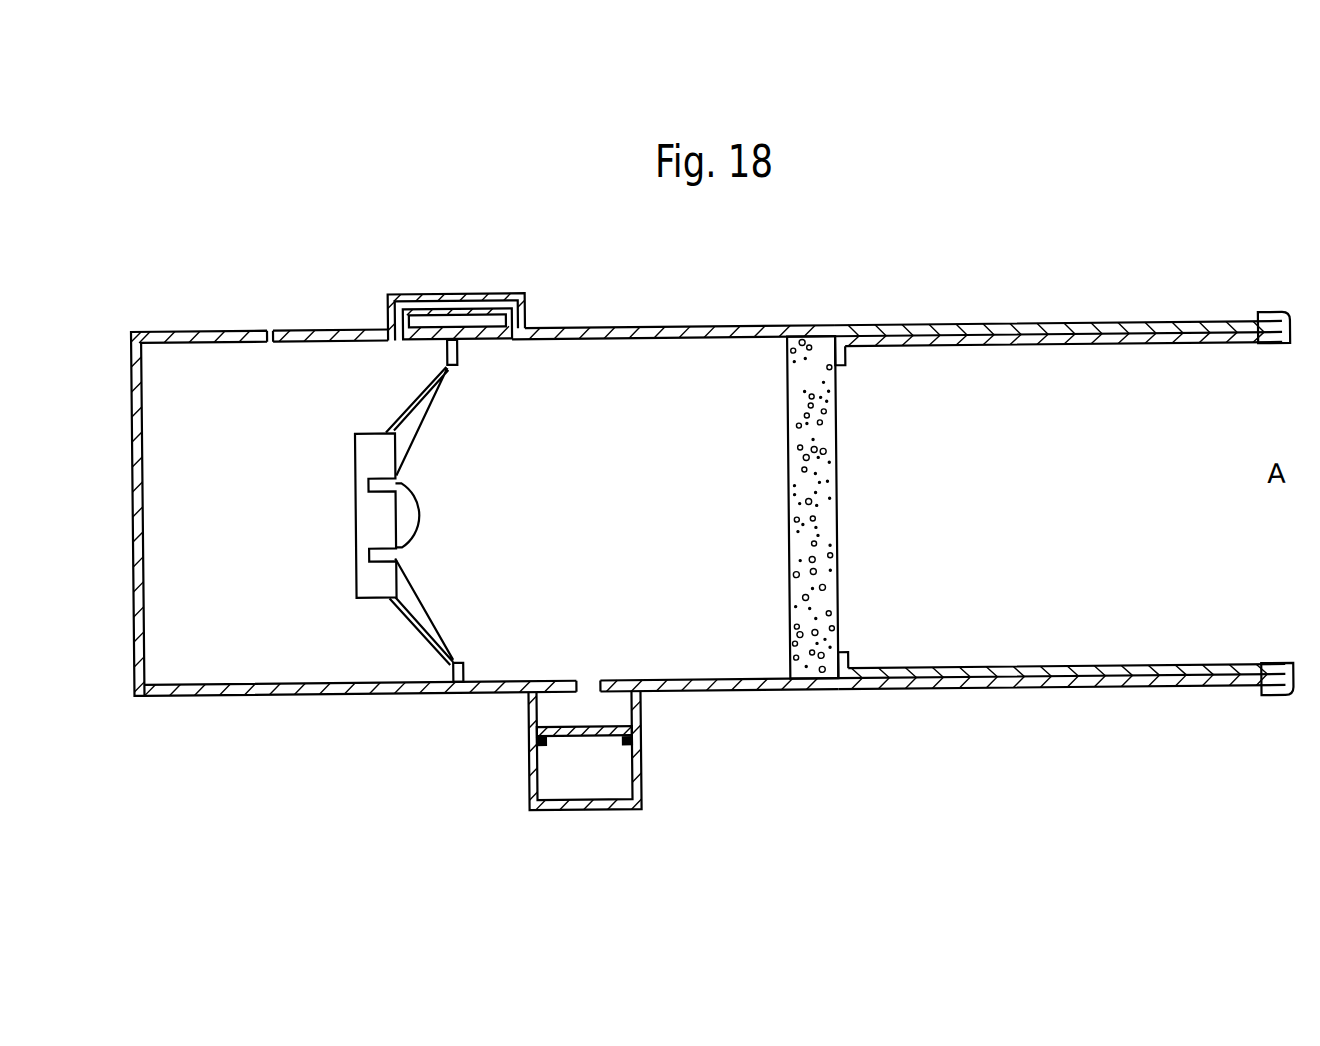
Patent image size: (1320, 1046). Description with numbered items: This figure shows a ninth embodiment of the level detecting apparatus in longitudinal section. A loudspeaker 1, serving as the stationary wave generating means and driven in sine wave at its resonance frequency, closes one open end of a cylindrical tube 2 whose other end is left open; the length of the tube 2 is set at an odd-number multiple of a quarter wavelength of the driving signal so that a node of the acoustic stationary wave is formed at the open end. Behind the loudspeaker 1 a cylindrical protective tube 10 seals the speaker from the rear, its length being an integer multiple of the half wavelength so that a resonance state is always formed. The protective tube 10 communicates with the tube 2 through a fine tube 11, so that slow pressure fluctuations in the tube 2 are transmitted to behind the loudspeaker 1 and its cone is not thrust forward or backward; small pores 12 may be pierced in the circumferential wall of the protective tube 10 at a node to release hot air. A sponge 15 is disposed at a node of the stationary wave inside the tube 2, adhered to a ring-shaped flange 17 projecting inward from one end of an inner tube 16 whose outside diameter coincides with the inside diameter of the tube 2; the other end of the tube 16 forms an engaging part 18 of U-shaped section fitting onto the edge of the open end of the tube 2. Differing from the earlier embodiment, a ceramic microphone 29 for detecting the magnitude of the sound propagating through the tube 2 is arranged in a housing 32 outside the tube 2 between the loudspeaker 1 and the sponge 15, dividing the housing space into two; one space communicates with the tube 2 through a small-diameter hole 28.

The loudspeaker 1 is at (422, 497).
The tube 2 is at (963, 334).
The protective tube 10 is at (160, 331).
The fine tube 11 is at (441, 309).
The small pores 12 is at (271, 331).
The sponge 15 is at (786, 486).
The tube 16 is at (1133, 348).
The ring-shaped flange 17 is at (838, 661).
The engaging part 18 is at (1265, 322).
The small-diameter hole 28 is at (581, 690).
The ceramic microphone 29 is at (579, 739).
The housing 32 is at (629, 773).